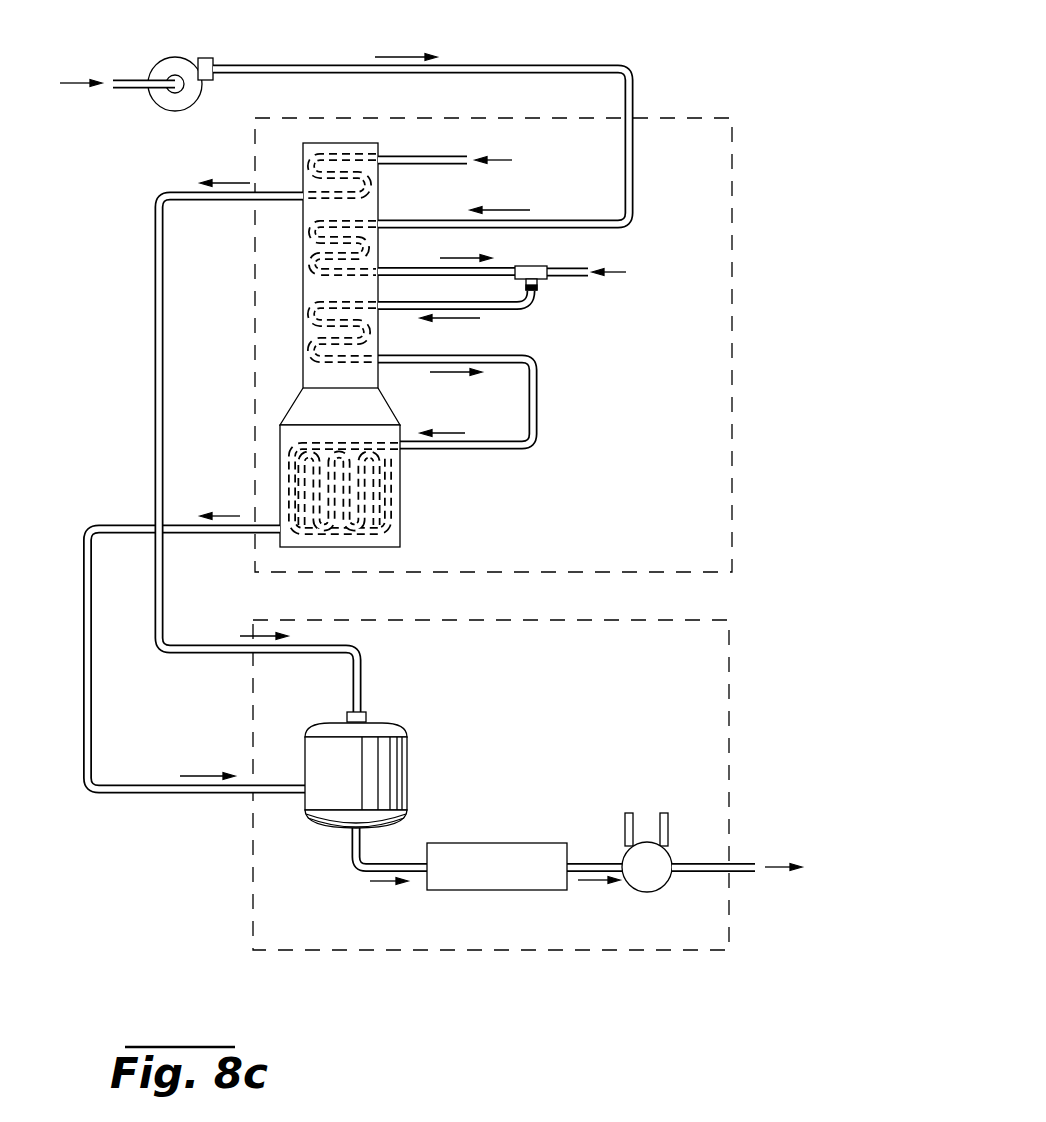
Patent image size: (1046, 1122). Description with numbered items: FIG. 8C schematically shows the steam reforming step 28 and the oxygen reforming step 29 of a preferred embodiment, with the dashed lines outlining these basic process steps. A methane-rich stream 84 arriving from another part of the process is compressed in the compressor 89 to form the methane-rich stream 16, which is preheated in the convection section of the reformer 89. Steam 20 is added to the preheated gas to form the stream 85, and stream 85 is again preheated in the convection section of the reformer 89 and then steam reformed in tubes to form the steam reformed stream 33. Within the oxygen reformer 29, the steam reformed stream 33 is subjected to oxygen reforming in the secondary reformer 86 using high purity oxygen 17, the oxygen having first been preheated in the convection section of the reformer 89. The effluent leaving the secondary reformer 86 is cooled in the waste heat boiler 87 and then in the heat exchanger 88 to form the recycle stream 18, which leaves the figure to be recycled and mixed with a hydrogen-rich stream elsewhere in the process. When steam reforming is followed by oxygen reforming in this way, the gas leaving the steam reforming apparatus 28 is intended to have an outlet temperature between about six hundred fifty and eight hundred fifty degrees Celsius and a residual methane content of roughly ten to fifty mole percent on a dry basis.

The methane-rich stream 16 is at (524, 66).
The high purity oxygen 17 is at (424, 168).
The recycle stream 18 is at (735, 860).
The steam 20 is at (576, 280).
The steam reforming step 28 is at (736, 272).
The oxygen reformer 29 is at (733, 682).
The steam reformed stream 33 is at (82, 650).
The methane-rich stream 84 is at (122, 82).
The steam-containing stream 85 is at (526, 312).
The secondary reformer 86 is at (408, 762).
The waste heat boiler 87 is at (500, 843).
The heat exchanger 88 is at (668, 855).
The compressor / reformer 89 is at (402, 527).